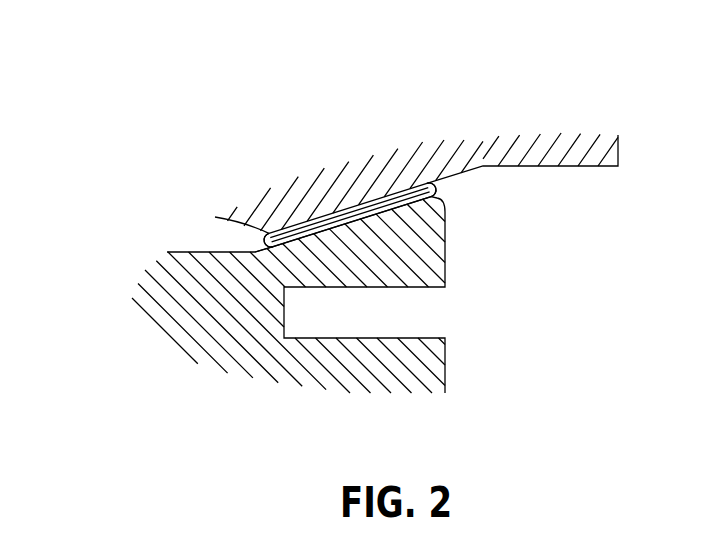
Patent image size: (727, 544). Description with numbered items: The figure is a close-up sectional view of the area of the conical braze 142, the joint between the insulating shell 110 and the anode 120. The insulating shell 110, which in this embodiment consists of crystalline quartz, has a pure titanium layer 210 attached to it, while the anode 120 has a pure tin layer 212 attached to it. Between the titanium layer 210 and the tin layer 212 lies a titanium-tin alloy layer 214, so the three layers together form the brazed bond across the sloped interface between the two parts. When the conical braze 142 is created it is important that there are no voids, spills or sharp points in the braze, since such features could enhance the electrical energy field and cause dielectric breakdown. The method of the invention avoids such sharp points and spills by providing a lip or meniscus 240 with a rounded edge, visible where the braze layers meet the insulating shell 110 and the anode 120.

The insulating shell 110 is at (577, 148).
The anode 120 is at (433, 370).
The titanium layer 210 is at (383, 200).
The tin layer 212 is at (357, 230).
The titanium-tin alloy layer 214 is at (436, 193).
The conical braze 142 is at (223, 237).
The lip or meniscus 240 is at (271, 242).